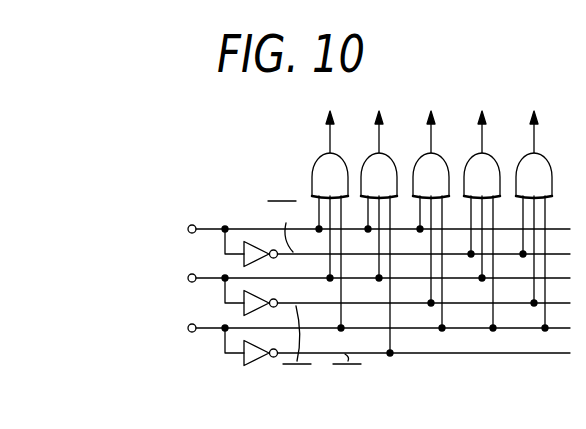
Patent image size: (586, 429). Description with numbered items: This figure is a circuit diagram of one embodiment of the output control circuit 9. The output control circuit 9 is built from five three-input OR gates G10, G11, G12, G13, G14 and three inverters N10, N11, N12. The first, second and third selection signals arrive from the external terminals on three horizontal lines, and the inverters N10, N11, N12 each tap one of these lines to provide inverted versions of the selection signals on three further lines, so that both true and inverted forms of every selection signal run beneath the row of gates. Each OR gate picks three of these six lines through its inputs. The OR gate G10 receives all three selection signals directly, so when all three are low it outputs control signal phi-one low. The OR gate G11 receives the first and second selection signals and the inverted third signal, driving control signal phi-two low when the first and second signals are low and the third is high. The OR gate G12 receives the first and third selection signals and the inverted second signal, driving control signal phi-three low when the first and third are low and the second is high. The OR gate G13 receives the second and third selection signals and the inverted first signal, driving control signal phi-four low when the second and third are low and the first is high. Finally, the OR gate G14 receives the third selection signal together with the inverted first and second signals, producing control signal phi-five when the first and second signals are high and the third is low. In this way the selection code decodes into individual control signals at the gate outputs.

The output control circuit 9 is at (274, 189).
The OR gate G10 is at (312, 177).
The OR gate G11 is at (361, 177).
The OR gate G12 is at (413, 177).
The OR gate G13 is at (464, 177).
The OR gate G14 is at (516, 177).
The inverter N10 is at (243, 262).
The inverter N11 is at (244, 312).
The inverter N12 is at (246, 357).